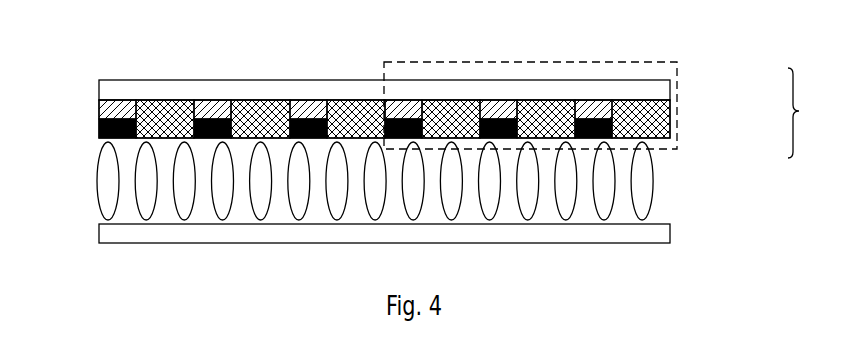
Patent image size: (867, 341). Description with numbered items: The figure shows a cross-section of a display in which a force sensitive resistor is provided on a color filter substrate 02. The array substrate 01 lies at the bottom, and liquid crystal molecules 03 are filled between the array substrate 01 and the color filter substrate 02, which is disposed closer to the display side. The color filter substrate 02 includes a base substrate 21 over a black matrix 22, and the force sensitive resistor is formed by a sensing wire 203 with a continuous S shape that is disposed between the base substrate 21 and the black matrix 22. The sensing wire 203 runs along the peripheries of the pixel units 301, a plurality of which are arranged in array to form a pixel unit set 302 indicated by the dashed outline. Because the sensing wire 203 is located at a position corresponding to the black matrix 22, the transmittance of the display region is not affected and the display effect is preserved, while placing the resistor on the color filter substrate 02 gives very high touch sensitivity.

The array substrate 01 is at (658, 230).
The color filter substrate 02 is at (807, 113).
The liquid crystal molecules 03 is at (651, 181).
The base substrate 21 is at (114, 92).
The black matrix 22 is at (99, 137).
The sensing wire 203 is at (208, 110).
The pixel unit 301 is at (660, 118).
The pixel unit set 302 is at (677, 66).